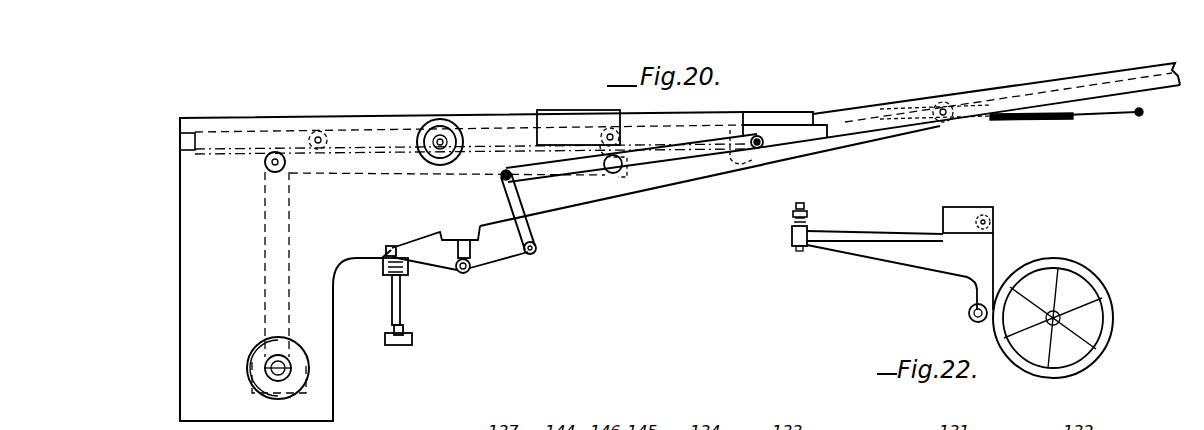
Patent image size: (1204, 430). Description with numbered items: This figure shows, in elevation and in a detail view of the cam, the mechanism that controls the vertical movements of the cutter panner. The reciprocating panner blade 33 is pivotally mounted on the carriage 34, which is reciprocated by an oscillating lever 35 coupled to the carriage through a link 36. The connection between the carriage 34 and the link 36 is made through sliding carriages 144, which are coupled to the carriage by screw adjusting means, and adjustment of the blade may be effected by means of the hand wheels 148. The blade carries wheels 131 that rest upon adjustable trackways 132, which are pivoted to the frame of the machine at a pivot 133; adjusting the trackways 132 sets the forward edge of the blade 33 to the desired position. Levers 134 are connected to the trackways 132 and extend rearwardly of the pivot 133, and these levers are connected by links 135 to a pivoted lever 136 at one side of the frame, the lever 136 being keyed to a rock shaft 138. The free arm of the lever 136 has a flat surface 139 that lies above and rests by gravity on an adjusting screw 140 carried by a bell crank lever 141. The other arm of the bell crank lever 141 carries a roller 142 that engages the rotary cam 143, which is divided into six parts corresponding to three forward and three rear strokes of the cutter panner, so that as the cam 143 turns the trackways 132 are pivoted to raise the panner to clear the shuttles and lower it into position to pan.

In FIG. 20, the panner blade 33 is at (1095, 118).
In FIG. 20, the carriage 34 is at (770, 114).
In FIG. 20, the oscillating lever 35 is at (288, 226).
In FIG. 20, the link 36 is at (478, 176).
In FIG. 20, the wheels 131 is at (945, 103).
In FIG. 20, the adjustable trackways 132 is at (1049, 93).
In FIG. 20, the pivot 133 is at (757, 149).
In FIG. 20, the levers 134 is at (681, 162).
In FIG. 20, the links 135 is at (525, 230).
In FIG. 20, the pivoted lever 136 is at (443, 263).
In FIG. 20, the rock shaft 138 is at (466, 272).
In FIG. 20, the flat surface 139 is at (392, 246).
In FIG. 22, the flat surface 139 is at (805, 207).
In FIG. 22, the adjusting screw 140 is at (806, 219).
In FIG. 20, the bell crank lever 141 is at (390, 302).
In FIG. 22, the bell crank lever 141 is at (870, 252).
In FIG. 20, the roller 142 is at (390, 344).
In FIG. 22, the roller 142 is at (969, 315).
In FIG. 22, the rotary cam 143 is at (1095, 361).
In FIG. 20, the sliding carriages 144 is at (558, 111).
In FIG. 20, the hand wheels 148 is at (438, 122).